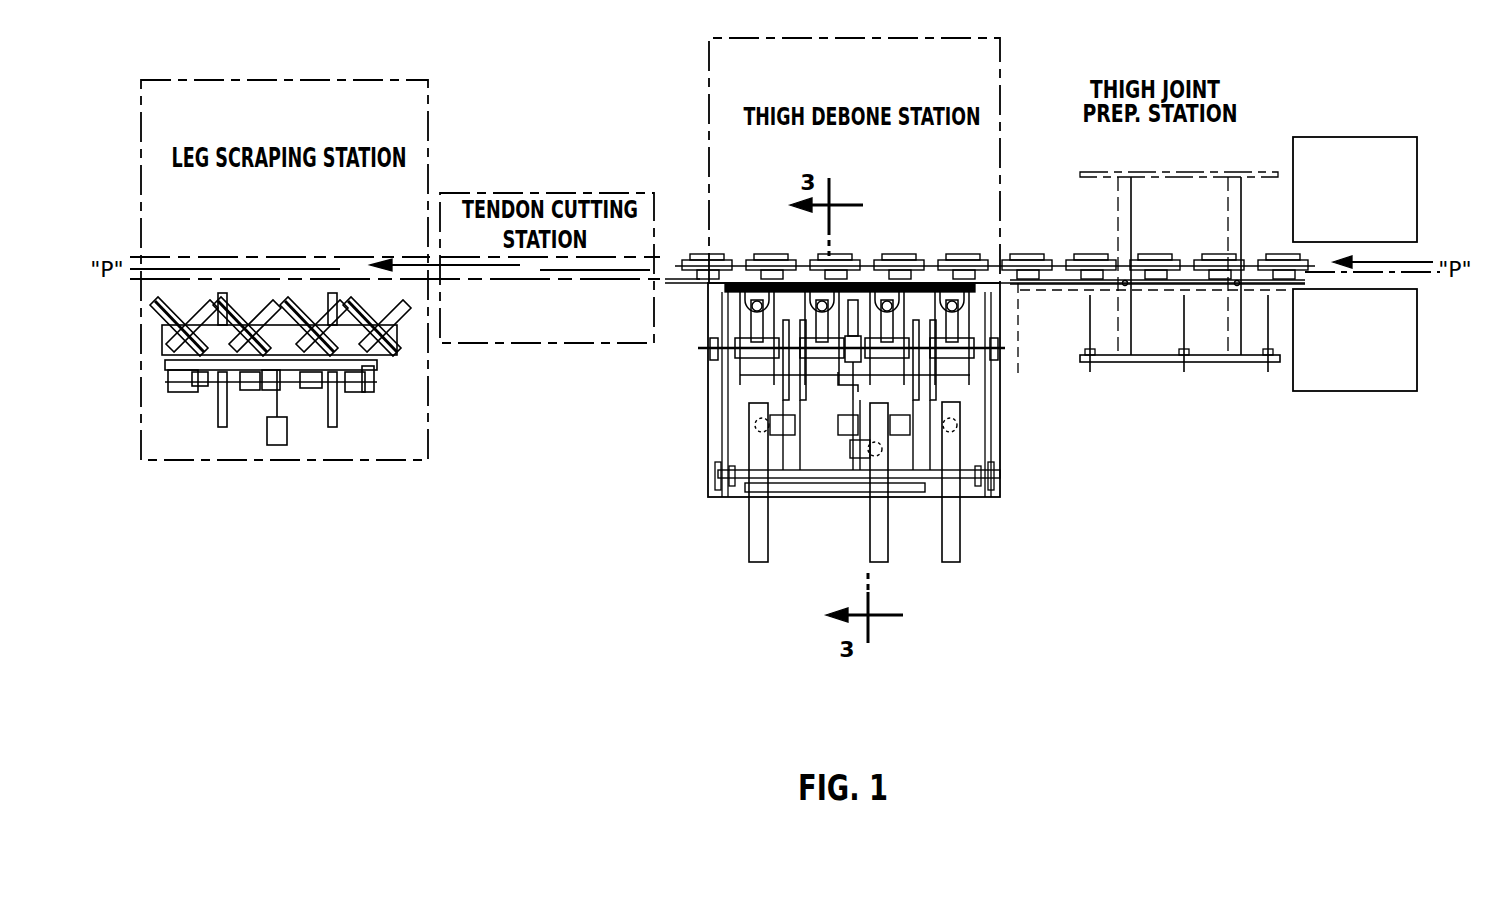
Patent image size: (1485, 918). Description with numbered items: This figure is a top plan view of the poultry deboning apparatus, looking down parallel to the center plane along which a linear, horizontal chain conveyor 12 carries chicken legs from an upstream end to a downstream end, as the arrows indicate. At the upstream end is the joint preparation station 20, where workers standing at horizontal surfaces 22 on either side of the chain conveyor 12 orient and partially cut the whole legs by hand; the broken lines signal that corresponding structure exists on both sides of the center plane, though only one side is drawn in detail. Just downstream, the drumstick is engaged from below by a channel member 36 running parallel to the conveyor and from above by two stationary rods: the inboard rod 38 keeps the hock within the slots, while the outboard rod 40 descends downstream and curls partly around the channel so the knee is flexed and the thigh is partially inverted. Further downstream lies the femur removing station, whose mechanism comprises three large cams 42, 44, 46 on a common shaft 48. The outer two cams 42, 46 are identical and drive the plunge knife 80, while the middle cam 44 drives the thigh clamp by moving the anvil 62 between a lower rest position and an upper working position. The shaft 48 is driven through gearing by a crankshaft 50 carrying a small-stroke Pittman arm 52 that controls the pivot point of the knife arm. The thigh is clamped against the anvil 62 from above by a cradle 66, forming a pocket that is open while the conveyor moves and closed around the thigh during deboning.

The chain conveyor 12 is at (1063, 257).
The joint preparation station 20 is at (1274, 376).
The horizontal surfaces 22 is at (1342, 195).
The channel member 36 is at (1018, 283).
The inboard rod 38 is at (1062, 287).
The outboard rod 40 is at (1173, 288).
The cam 42 is at (768, 511).
The middle cam 44 is at (888, 510).
The cam 46 is at (953, 562).
The common shaft 48 is at (825, 480).
The crankshaft 50 is at (740, 483).
The Pittman arm 52 is at (727, 422).
The anvil 62 is at (905, 295).
The cradle 66 is at (967, 285).
The plunge knife 80 is at (937, 292).